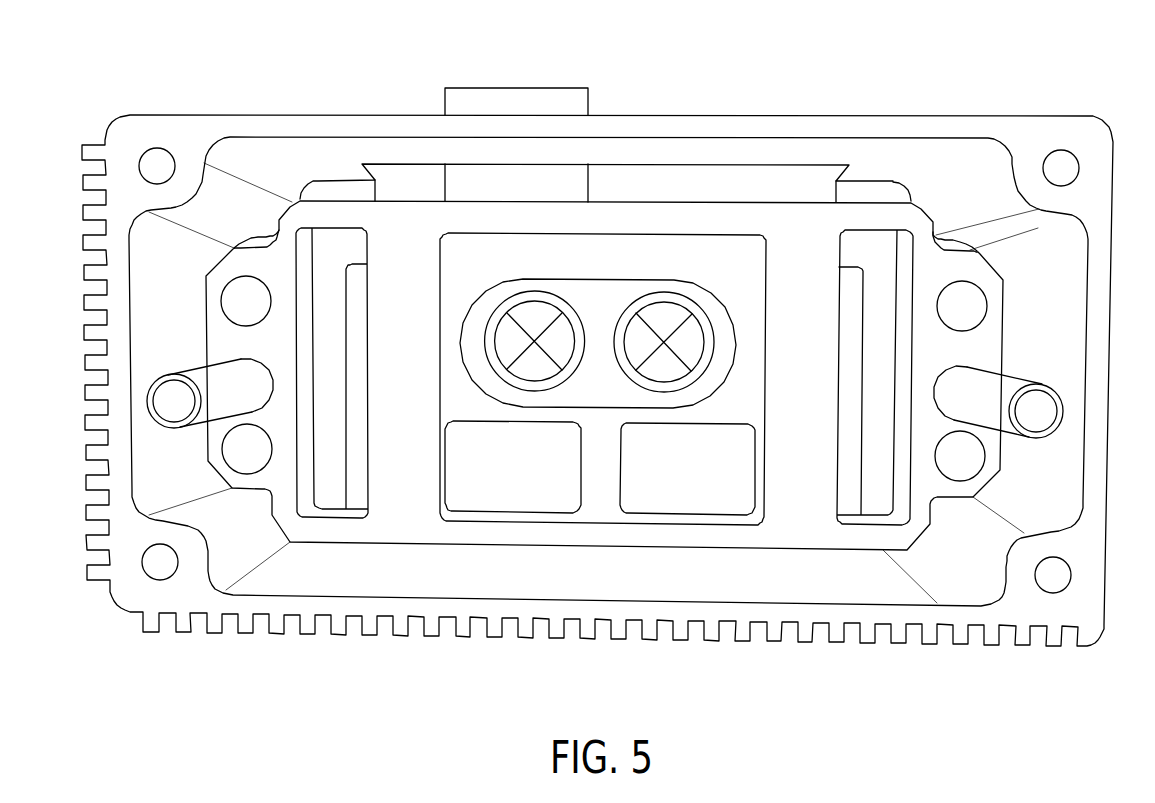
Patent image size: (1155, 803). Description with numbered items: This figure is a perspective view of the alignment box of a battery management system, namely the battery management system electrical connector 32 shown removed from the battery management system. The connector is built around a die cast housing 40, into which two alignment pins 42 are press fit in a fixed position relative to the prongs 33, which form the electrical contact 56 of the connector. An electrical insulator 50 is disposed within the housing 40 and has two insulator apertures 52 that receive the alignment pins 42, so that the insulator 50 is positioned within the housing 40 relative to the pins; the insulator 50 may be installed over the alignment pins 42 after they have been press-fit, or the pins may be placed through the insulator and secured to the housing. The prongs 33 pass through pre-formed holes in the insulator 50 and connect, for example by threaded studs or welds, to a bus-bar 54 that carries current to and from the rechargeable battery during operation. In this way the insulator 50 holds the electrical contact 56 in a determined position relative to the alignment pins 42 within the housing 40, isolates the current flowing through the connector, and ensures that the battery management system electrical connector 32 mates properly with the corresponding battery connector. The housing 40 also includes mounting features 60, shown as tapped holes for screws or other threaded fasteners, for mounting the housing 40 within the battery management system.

The battery management system electrical connector 32 is at (434, 79).
The prongs 33 is at (561, 301).
The die cast housing 40 is at (183, 130).
The alignment pins 42 is at (203, 380).
The electrical insulator 50 is at (798, 237).
The insulator apertures 52 is at (255, 358).
The bus-bar 54 is at (553, 100).
The electrical contact 56 is at (535, 367).
The mounting features 60 is at (158, 160).